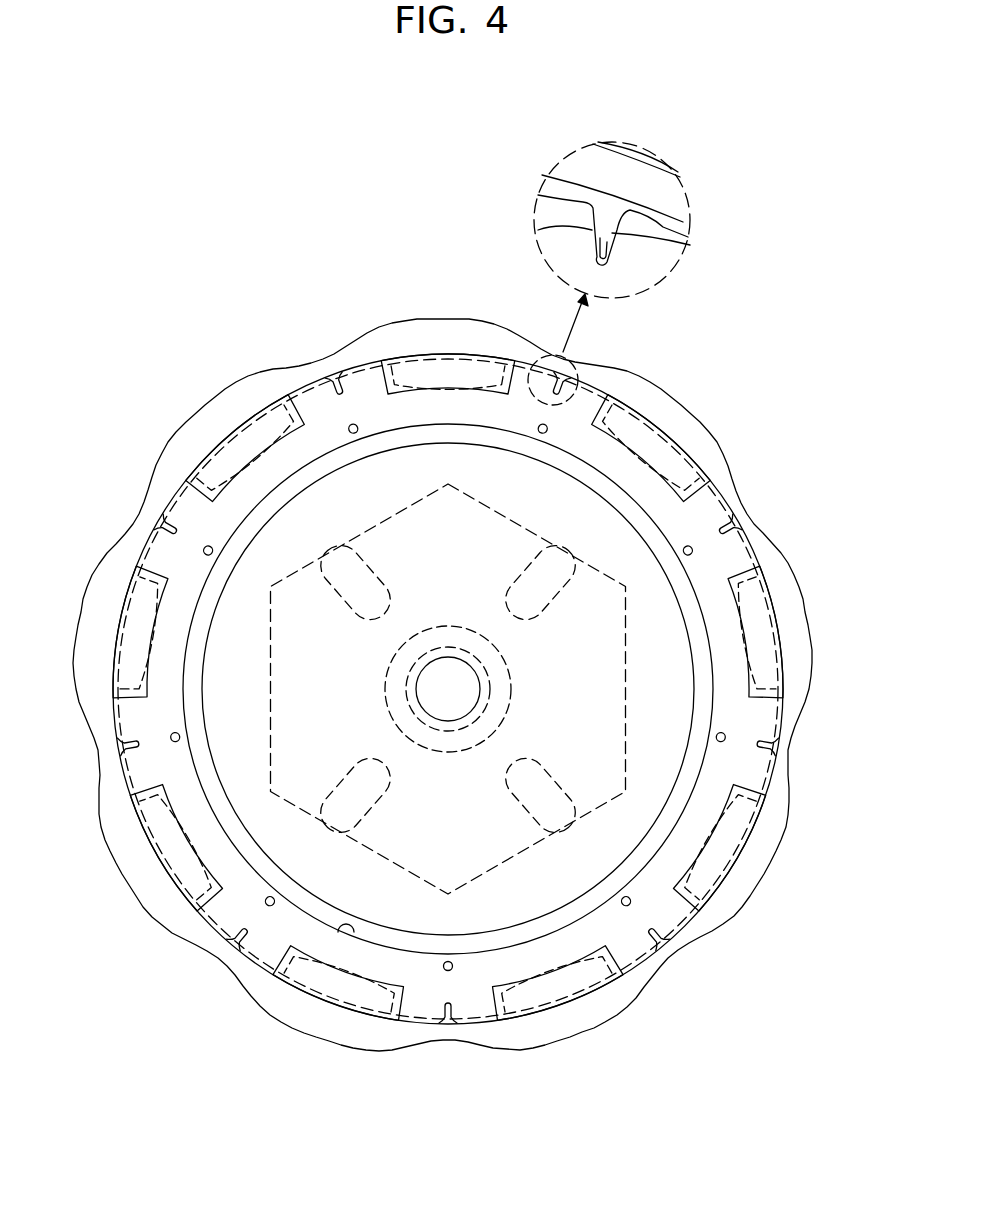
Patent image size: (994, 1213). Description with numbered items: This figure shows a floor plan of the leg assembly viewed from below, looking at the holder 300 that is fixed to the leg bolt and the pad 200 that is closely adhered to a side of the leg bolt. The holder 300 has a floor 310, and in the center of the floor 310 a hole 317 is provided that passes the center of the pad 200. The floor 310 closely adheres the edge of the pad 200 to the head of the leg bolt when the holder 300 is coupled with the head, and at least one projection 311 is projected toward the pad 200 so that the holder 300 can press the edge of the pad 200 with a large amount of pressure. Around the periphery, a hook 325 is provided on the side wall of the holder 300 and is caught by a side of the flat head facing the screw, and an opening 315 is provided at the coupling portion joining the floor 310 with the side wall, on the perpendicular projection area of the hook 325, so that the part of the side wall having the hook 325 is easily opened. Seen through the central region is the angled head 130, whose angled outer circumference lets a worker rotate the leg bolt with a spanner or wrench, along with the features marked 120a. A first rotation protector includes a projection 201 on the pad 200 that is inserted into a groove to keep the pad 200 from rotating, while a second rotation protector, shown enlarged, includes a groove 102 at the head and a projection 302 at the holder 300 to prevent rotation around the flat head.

The holder 300 is at (196, 408).
The floor 310 is at (157, 763).
The opening 315 is at (743, 635).
The hook 325 is at (728, 855).
The groove 102 is at (543, 230).
The projection 302 is at (680, 265).
The projection 311 is at (447, 970).
The pad 200 is at (208, 596).
The hole 317 is at (348, 933).
The angled head 130 is at (627, 747).
The through hole 120a is at (520, 582).
The projection 201 is at (522, 798).